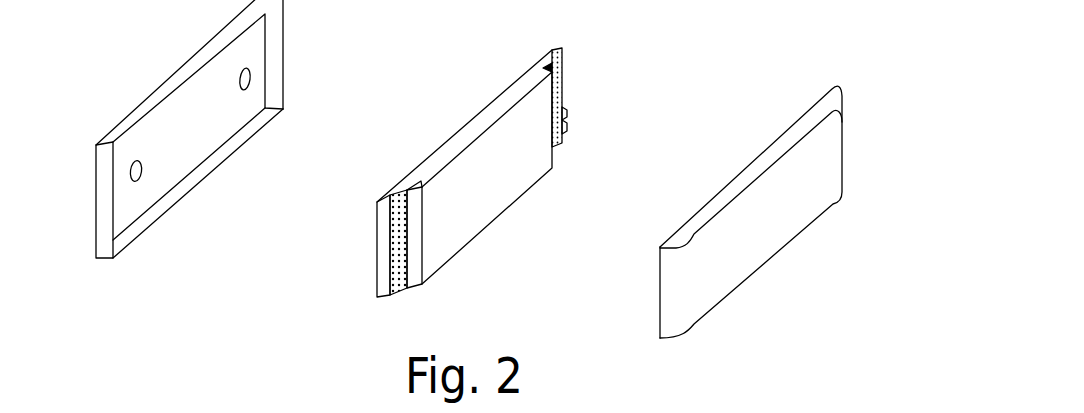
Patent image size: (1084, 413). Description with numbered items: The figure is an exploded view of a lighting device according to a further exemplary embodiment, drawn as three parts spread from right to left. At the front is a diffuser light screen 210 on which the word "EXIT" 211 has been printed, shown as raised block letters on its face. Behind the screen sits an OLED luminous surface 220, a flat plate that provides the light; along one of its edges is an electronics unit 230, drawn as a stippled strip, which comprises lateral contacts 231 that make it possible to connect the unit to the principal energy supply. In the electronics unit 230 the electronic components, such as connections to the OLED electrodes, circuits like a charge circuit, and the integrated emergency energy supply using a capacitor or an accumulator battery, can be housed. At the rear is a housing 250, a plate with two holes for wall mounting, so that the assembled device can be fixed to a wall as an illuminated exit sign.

The diffuser light screen 210 is at (830, 171).
The EXIT 211 is at (807, 193).
The OLED luminous surface 220 is at (470, 207).
The electronics unit 230 is at (563, 147).
The lateral contacts 231 is at (567, 123).
The housing 250 is at (272, 45).